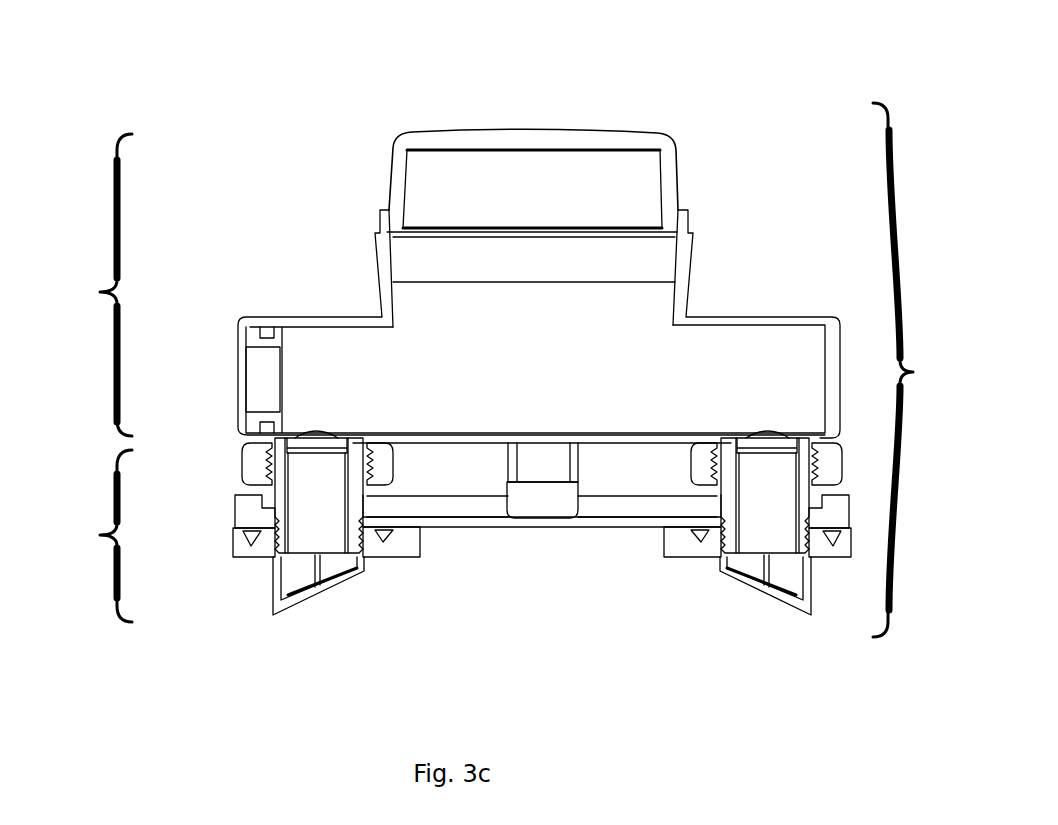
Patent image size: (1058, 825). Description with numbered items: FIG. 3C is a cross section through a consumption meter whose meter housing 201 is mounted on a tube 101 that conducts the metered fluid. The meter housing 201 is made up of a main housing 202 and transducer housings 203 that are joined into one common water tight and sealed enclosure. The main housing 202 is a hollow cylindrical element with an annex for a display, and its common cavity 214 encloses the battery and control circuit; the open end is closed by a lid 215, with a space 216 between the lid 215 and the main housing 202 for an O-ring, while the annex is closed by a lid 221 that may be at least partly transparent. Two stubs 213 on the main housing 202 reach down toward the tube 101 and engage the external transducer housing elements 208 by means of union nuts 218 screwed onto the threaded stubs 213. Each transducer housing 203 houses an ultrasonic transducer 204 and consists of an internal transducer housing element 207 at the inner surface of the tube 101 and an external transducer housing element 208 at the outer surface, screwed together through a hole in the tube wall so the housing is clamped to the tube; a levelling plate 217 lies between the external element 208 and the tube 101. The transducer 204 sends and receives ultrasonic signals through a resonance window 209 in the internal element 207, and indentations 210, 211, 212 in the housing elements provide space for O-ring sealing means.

The tube 101 is at (468, 520).
The meter housing 201 is at (916, 370).
The main housing 202 is at (87, 285).
The transducer housing 203 is at (87, 536).
The ultrasonic transducer 204 is at (320, 587).
The internal transducer housing element 207 is at (252, 547).
The external transducer housing element 208 is at (277, 495).
The resonance window 209 is at (315, 590).
The indentation 210 is at (268, 452).
The indentation 211 is at (275, 523).
The indentation 212 is at (247, 537).
The stub 213 is at (270, 443).
The cavity 214 is at (505, 313).
The lid 215 is at (244, 366).
The space 216 is at (265, 333).
The levelling plate 217 is at (617, 505).
The union nut 218 is at (387, 465).
The lid 221 is at (597, 140).